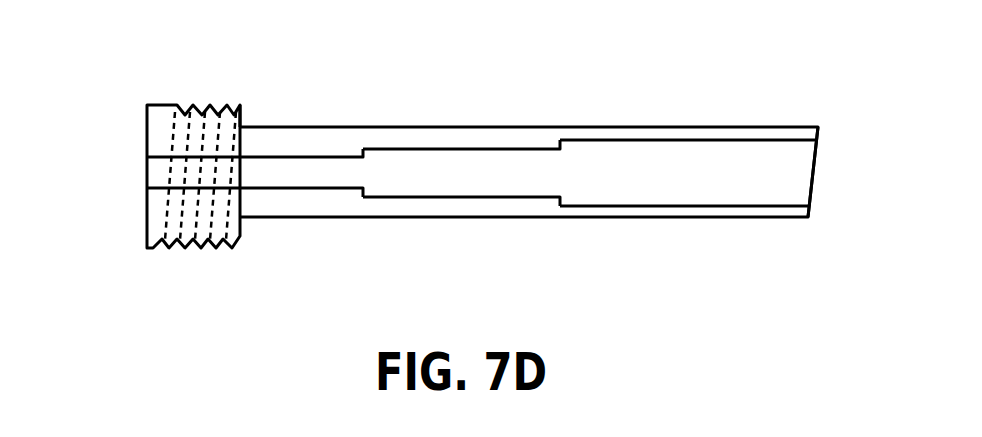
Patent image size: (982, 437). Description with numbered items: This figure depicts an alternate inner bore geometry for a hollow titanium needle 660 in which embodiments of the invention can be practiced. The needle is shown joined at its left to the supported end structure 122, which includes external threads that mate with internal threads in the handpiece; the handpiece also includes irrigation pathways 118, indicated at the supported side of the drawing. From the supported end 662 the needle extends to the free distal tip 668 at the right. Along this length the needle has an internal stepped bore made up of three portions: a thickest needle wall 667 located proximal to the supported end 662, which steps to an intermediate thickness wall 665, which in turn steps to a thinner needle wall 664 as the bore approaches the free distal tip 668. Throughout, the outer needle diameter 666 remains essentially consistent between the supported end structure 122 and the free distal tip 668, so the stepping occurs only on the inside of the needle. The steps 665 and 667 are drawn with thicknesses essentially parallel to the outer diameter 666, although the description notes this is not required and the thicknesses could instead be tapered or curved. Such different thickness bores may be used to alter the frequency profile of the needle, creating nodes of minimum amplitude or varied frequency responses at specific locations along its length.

The irrigation pathways 118 is at (132, 178).
The supported end structure 122 is at (162, 105).
The supported end 662 is at (248, 120).
The hollow titanium needle 660 is at (561, 134).
The outer needle diameter 666 is at (592, 127).
The free distal tip 668 is at (815, 172).
The thickest needle wall 667 is at (342, 158).
The intermediate thickness wall 665 is at (538, 196).
The thinner needle wall 664 is at (692, 142).